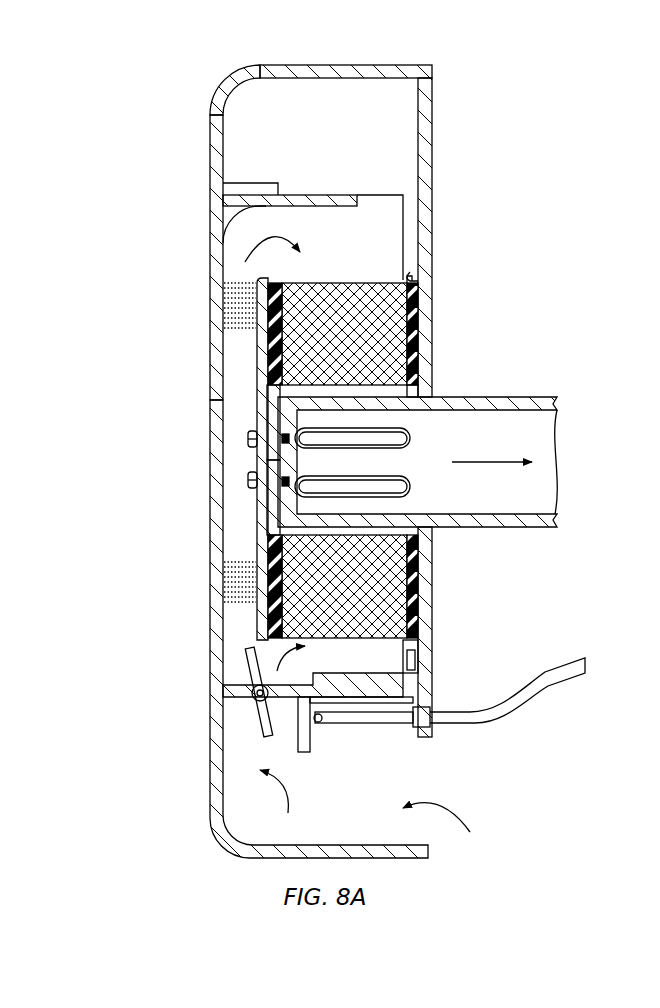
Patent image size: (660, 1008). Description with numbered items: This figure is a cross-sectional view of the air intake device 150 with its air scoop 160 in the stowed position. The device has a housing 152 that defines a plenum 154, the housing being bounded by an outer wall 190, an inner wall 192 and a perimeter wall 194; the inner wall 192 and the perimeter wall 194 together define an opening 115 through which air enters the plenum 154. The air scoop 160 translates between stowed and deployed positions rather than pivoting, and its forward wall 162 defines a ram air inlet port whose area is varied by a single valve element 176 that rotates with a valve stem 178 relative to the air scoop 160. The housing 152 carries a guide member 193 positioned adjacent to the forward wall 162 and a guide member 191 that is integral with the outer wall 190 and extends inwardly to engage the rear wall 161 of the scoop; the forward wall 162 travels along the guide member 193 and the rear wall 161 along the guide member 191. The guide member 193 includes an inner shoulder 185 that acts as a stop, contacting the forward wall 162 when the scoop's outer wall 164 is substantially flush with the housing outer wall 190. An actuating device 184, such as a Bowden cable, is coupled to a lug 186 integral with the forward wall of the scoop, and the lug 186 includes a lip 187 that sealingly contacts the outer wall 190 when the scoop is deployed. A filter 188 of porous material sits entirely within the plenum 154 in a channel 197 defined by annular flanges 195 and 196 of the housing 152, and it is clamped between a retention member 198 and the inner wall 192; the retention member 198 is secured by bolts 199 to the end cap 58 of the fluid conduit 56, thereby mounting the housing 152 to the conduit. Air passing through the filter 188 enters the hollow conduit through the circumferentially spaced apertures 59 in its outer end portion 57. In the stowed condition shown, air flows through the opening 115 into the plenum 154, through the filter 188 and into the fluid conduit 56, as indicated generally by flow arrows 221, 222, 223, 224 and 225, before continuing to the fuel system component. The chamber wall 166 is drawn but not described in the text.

The air intake device 150 is at (495, 116).
The housing 152 is at (300, 65).
The perimeter wall 194 is at (350, 65).
The inner wall 192 is at (432, 165).
The outer wall 190 is at (208, 152).
The air scoop 160 is at (206, 562).
The guide member 191 is at (245, 182).
The rear wall 161 is at (322, 195).
The inner chamber wall 166 is at (405, 200).
The filter 188 is at (405, 245).
The plenum 154 is at (328, 248).
The flow arrow 224 is at (228, 247).
The outer wall 164 is at (222, 305).
The retention member 198 is at (258, 352).
The channel 197 is at (412, 330).
The annular flange 196 is at (412, 278).
The annular flange 195 is at (418, 395).
The fluid conduit 56 is at (525, 397).
The outer end portion 57 is at (262, 425).
The end cap 58 is at (270, 495).
The bolts 199 is at (248, 438).
The apertures 59 is at (412, 438).
The flow arrow 225 is at (560, 455).
The forward wall 162 is at (225, 700).
The guide member 193 is at (413, 663).
The flow arrow 223 is at (248, 665).
The valve stem 178 is at (256, 694).
The valve element 176 is at (240, 735).
The lip 187 is at (300, 752).
The inner shoulder 185 is at (370, 718).
The lug 186 is at (320, 722).
The actuating device 184 is at (520, 700).
The opening 115 is at (420, 767).
The flow arrow 221 is at (482, 820).
The flow arrow 222 is at (232, 813).